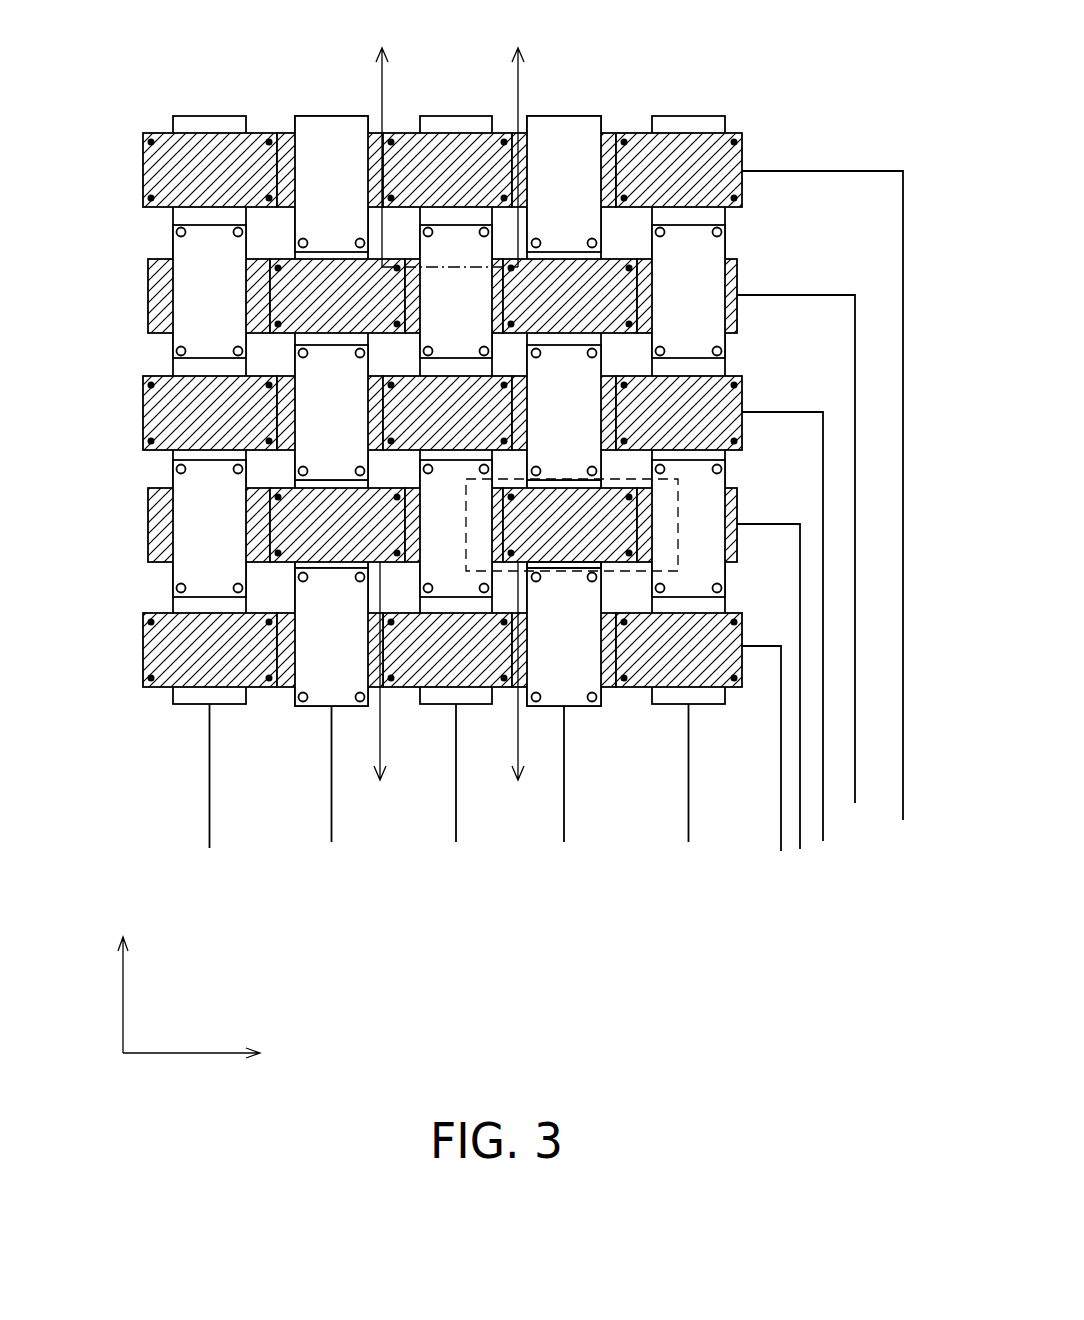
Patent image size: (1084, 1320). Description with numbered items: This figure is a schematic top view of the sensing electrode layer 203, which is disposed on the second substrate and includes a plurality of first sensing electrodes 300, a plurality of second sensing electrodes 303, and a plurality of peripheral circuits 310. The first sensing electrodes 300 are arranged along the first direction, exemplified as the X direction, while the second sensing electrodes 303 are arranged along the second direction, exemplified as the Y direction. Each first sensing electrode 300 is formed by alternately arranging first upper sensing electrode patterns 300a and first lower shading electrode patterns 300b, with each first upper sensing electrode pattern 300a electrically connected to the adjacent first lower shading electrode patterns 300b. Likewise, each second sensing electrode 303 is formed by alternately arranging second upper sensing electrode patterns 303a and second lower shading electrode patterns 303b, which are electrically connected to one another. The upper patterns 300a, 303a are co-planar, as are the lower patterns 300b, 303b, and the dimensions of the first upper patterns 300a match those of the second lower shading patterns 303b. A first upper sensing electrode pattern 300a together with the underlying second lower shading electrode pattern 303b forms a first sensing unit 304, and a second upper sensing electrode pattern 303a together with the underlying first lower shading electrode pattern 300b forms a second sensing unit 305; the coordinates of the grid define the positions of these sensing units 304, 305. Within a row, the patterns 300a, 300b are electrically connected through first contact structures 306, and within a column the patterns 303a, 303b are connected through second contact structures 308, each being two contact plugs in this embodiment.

The sensing electrode layer 203 is at (504, 614).
The first sensing electrode 300 is at (312, 961).
The first upper sensing electrode pattern 300a is at (230, 670).
The first lower shading electrode pattern 300b is at (287, 667).
The second sensing electrode 303 is at (442, 961).
The second upper sensing electrode pattern 303a is at (342, 690).
The second lower shading electrode pattern 303b is at (355, 485).
The first sensing unit 304 is at (300, 812).
The second sensing unit 305 is at (276, 889).
The first contact structure 306 is at (745, 376).
The second contact structure 308 is at (722, 468).
The peripheral circuit 310 is at (700, 832).